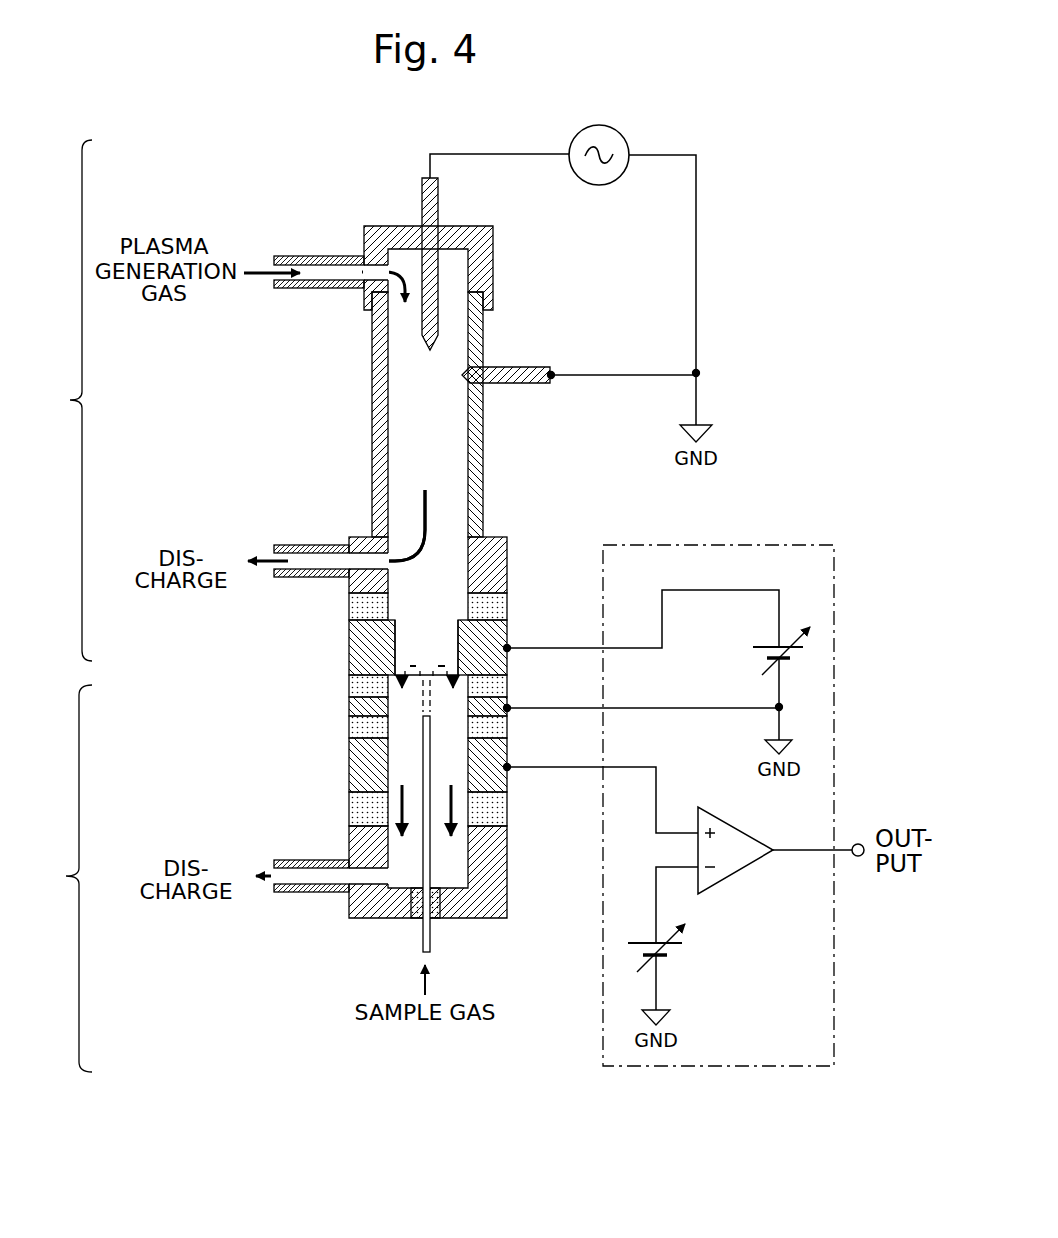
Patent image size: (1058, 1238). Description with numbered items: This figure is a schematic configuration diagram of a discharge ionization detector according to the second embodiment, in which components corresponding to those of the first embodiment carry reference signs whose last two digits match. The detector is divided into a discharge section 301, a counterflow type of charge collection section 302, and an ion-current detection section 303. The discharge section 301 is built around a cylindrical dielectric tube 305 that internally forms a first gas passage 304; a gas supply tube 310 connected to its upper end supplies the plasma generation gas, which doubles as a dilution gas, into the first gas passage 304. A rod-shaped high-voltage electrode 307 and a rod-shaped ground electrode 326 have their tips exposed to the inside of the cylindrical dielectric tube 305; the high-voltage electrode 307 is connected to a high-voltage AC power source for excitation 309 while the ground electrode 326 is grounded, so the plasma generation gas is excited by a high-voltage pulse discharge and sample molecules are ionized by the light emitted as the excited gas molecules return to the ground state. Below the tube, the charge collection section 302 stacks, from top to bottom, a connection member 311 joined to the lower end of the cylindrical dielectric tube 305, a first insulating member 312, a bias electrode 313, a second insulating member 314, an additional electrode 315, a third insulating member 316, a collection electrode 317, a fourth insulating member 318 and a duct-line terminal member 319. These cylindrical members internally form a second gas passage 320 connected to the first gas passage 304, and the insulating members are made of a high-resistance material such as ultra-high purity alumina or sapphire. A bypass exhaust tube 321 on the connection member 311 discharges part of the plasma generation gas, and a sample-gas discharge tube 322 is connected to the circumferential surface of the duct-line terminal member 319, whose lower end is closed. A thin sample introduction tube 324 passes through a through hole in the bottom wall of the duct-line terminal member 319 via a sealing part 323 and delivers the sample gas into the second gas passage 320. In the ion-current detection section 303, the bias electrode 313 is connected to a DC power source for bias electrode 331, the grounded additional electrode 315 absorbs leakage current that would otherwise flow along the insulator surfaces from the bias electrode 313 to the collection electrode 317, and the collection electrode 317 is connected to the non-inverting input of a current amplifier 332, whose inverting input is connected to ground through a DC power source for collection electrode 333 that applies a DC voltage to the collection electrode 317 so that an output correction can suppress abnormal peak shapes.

The discharge section 301 is at (56, 400).
The charge collection section 302 is at (55, 878).
The ion-current detection section 303 is at (835, 572).
The first gas passage 304 is at (415, 418).
The cylindrical dielectric tube 305 is at (485, 457).
The high-voltage electrode 307 is at (420, 208).
The high-voltage AC power source for excitation 309 is at (622, 133).
The gas supply tube 310 is at (319, 255).
The connection member 311 is at (507, 568).
The first insulating member 312 is at (507, 607).
The bias electrode 313 is at (507, 632).
The second insulating member 314 is at (350, 683).
The additional electrode 315 is at (348, 708).
The third insulating member 316 is at (348, 723).
The collection electrode 317 is at (348, 763).
The fourth insulating member 318 is at (348, 802).
The duct-line terminal member 319 is at (467, 920).
The second gas passage 320 is at (420, 652).
The bypass exhaust tube 321 is at (312, 544).
The sample-gas discharge tube 322 is at (312, 893).
The sealing part 323 is at (412, 920).
The sample introduction tube 324 is at (430, 860).
The ground electrode 326 is at (513, 366).
The DC power source for bias electrode 331 is at (765, 645).
The current amplifier 332 is at (748, 867).
The DC power source for collection electrode 333 is at (673, 959).